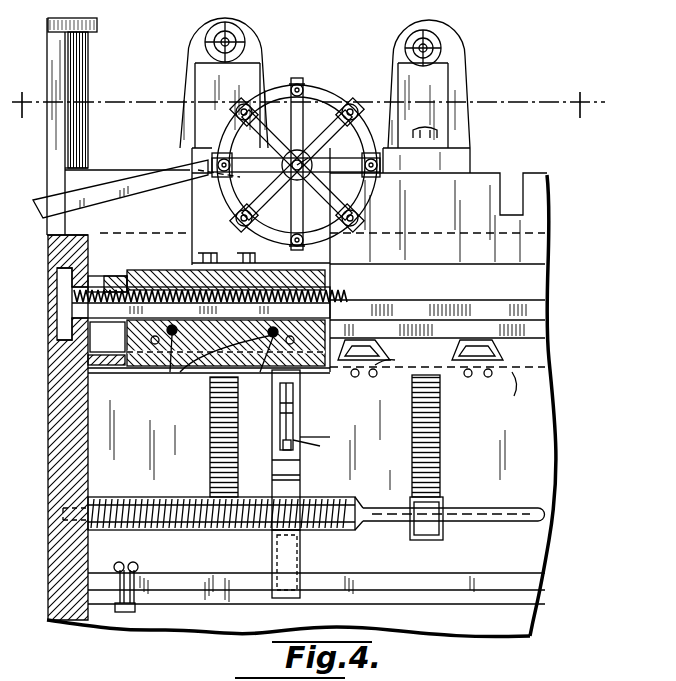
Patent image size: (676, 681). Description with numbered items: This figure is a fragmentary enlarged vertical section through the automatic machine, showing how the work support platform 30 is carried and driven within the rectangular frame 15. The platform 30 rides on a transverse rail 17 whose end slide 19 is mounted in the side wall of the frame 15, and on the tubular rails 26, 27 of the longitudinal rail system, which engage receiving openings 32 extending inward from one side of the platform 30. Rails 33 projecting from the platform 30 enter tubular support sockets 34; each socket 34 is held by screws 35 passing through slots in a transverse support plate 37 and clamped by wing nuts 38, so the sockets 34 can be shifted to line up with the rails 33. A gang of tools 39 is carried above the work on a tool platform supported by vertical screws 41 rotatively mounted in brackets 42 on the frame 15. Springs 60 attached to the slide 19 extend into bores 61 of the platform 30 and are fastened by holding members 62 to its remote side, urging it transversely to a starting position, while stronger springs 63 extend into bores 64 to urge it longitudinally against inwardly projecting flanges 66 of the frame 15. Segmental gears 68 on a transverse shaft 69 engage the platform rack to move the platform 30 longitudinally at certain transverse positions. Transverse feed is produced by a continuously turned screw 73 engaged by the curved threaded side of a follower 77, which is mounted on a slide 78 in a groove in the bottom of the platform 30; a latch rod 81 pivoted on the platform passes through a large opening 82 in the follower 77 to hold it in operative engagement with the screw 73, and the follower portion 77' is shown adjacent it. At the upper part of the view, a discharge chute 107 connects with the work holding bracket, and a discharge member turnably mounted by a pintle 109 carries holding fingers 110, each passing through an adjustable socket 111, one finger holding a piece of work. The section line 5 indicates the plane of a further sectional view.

The section line 5- 5 is at (308, 97).
The rectangular frame 15 is at (50, 446).
The rail 17 is at (207, 343).
The slide 19 is at (60, 276).
The tube 26 is at (150, 380).
The tube 27 is at (280, 366).
The work support platform 30 is at (152, 272).
The receiving opening 32 is at (266, 416).
The rail 33 is at (155, 344).
The tubular support socket 34 is at (443, 340).
The screw 35 is at (360, 378).
The transverse support plate 37 is at (524, 389).
The wing nut 38 is at (372, 383).
The tool 39 is at (245, 42).
The vertical screw 41 is at (88, 68).
The bracket 42 is at (48, 24).
The spring 60 is at (100, 276).
The bore 61 is at (326, 284).
The holding member 62 is at (280, 335).
The spring 63 is at (208, 366).
The bore 64 is at (190, 374).
The inwardly projecting flange 66 is at (118, 276).
The segmental gear 68 is at (210, 430).
The shaft 69 is at (482, 508).
The screw 73 is at (352, 497).
The follower 77 is at (261, 564).
The slide extension 77' is at (313, 562).
The slide 78 is at (315, 427).
The rod 81 is at (316, 446).
The opening 82 is at (272, 410).
The discharge chute 107 is at (104, 190).
The pintle 109 is at (296, 159).
The holding finger 110 is at (298, 80).
The socket 111 is at (322, 88).